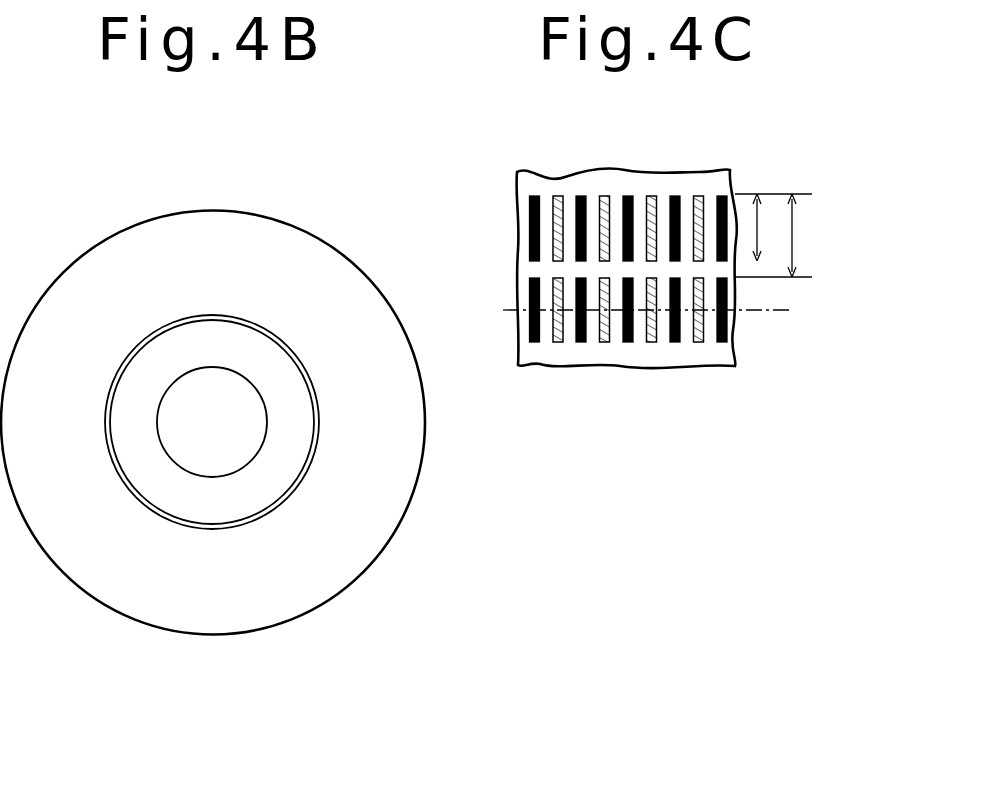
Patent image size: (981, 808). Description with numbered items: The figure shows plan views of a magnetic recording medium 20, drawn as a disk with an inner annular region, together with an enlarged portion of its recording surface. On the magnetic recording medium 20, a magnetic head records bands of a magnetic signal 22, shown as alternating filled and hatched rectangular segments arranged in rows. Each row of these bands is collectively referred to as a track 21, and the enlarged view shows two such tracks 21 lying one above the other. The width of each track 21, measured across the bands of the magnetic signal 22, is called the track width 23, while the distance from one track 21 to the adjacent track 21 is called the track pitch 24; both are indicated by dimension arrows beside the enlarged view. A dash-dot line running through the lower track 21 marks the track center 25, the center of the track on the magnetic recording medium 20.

In FIG. 4B, the magnetic recording medium 20 is at (347, 562).
In FIG. 4C, the magnetic recording medium 20 is at (675, 355).
In FIG. 4B, the tracks 21 is at (318, 413).
In FIG. 4C, the tracks 21 is at (523, 232).
In FIG. 4C, the bands of a magnetic signal 22 is at (700, 196).
In FIG. 4C, the track width 23 is at (757, 194).
In FIG. 4C, the track pitch 24 is at (792, 194).
In FIG. 4C, the track center 25 is at (773, 310).